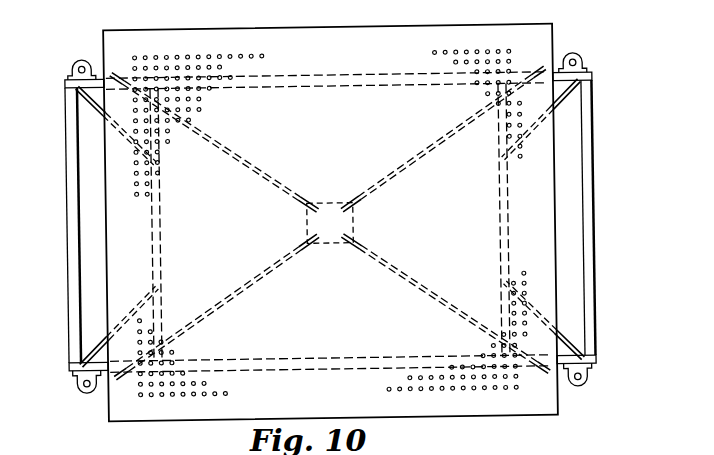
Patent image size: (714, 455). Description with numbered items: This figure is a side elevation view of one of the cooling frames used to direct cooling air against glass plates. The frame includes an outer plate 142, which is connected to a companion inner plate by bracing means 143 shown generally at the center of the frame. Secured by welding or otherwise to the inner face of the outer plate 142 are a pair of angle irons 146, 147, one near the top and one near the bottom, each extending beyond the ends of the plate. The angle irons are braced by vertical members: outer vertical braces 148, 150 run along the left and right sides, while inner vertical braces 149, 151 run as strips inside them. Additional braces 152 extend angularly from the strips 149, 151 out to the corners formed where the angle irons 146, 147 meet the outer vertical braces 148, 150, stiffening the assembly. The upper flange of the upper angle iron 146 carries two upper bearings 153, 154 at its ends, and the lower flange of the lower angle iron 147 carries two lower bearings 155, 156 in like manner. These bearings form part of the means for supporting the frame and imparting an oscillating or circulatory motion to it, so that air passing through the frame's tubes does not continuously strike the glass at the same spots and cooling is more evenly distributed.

The outer plate 142 is at (349, 136).
The bracing means 143 is at (360, 247).
The angle iron 146 is at (397, 75).
The angle iron 147 is at (253, 370).
The vertical brace 148 is at (67, 262).
The vertical brace 149 is at (160, 240).
The vertical brace 150 is at (593, 223).
The vertical brace 151 is at (500, 220).
The brace 152 is at (566, 104).
The upper bearing 153 is at (78, 58).
The upper bearing 154 is at (582, 55).
The lower bearing 155 is at (78, 383).
The lower bearing 156 is at (586, 378).